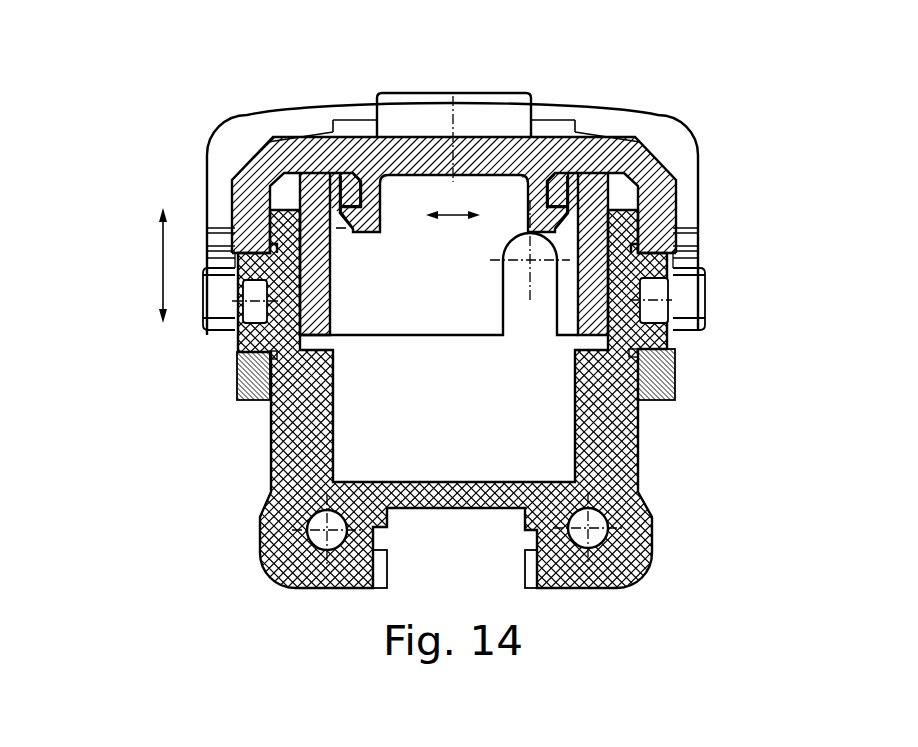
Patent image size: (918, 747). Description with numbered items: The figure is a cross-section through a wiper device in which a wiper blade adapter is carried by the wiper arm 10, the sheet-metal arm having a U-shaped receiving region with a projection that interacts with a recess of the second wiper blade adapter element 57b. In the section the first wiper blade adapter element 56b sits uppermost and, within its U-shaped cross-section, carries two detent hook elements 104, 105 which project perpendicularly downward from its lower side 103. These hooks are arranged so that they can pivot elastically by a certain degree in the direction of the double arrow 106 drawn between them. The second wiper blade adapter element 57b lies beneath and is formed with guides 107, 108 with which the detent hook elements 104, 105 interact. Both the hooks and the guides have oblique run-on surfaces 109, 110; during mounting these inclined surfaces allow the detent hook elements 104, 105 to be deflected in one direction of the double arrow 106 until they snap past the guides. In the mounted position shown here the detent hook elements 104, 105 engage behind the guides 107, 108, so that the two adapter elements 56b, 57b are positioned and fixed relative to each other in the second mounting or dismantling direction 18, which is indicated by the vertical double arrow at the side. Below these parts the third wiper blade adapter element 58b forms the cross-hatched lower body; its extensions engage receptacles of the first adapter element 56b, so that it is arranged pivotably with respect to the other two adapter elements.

The wiper arm 10 is at (690, 148).
The second mounting or dismantling direction 18 is at (162, 268).
The first wiper blade adapter element 56b is at (654, 152).
The second wiper blade adapter element 57b is at (596, 229).
The third wiper blade adapter element 58b is at (612, 430).
The lower side 103 is at (441, 178).
The detent hook element 104 is at (372, 220).
The detent hook element 105 is at (542, 212).
The double arrow 106 is at (458, 218).
The guide 107 is at (307, 176).
The guide 108 is at (630, 158).
The oblique run-on surface 109 is at (343, 229).
The oblique run-on surface 110 is at (360, 173).